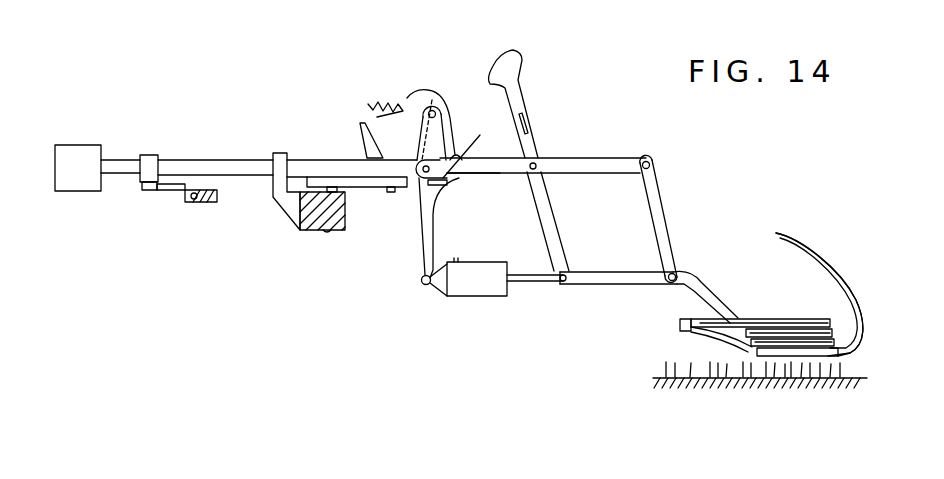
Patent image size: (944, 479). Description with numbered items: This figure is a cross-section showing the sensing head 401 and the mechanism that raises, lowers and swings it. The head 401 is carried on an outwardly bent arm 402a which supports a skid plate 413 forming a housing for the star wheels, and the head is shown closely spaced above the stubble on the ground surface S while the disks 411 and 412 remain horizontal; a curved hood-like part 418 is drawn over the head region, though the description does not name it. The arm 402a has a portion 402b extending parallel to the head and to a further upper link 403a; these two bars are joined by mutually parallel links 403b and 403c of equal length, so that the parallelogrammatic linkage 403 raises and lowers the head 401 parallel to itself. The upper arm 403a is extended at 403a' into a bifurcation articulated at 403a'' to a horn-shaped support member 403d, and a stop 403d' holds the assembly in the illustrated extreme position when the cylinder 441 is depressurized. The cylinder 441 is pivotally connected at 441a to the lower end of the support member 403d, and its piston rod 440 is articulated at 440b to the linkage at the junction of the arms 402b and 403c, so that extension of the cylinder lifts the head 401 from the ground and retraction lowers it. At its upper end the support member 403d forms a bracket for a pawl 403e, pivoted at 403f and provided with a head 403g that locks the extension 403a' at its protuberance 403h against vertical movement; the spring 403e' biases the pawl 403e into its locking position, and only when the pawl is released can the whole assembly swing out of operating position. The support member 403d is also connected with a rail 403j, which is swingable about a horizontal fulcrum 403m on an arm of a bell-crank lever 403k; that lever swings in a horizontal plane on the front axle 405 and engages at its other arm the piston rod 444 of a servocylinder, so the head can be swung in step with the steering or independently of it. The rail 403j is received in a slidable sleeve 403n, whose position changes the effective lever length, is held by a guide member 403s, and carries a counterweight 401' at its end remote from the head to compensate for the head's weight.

The counterweight 401' is at (93, 191).
The slidable sleeve 403n is at (150, 155).
The piston rod 444 is at (207, 202).
The rail 403j is at (328, 167).
The guide member 403s is at (280, 213).
The front axle 405 is at (308, 232).
The bell-crank lever 403k is at (353, 188).
The articulation 403a'' is at (334, 143).
The pawl 403e is at (389, 115).
The spring 403e' is at (357, 108).
The pawl head 403g is at (445, 88).
The pivot 403f is at (437, 112).
The protuberance 403h is at (453, 151).
The stop 403d' is at (483, 156).
The horizontal fulcrum 403m is at (405, 205).
The upper arm 403a is at (543, 111).
The extension 403a' is at (481, 192).
The parallelogrammatic linkage 403 is at (657, 166).
The link 403b is at (665, 225).
The link 403c is at (562, 227).
The horn-shaped support member 403d is at (465, 228).
The pivotal connection 441a is at (422, 285).
The cylinder 441 is at (462, 296).
The piston rod 440 is at (537, 283).
The articulation 440b is at (562, 285).
The bar portion 402b is at (595, 285).
The outwardly bent arm 402a is at (705, 285).
The sensing head 401 is at (819, 278).
The hood 418 is at (837, 277).
The disk 412 is at (783, 328).
The skid plate 413 is at (857, 337).
The disk 411 is at (753, 345).
The ground surface S is at (853, 377).